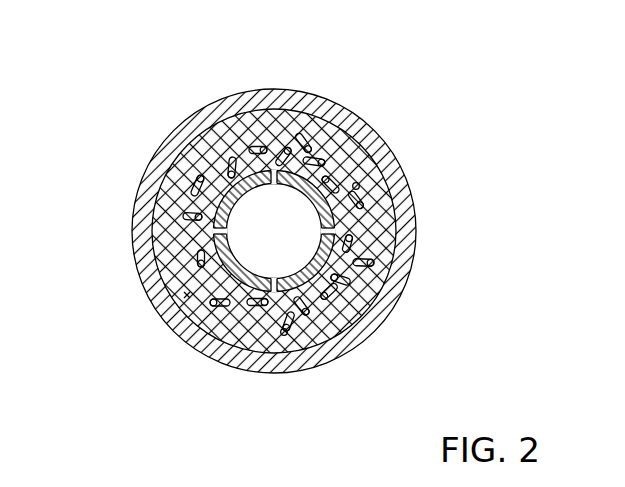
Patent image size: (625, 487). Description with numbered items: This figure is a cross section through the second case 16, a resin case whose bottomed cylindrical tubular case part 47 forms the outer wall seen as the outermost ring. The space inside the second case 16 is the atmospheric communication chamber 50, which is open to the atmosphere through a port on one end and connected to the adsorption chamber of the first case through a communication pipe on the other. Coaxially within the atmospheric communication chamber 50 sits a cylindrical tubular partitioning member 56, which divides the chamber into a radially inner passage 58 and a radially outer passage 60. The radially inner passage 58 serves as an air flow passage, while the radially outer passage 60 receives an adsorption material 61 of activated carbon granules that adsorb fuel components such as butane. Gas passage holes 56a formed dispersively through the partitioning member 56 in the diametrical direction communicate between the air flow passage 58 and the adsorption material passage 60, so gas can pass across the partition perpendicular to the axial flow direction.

The second case 16 is at (188, 97).
The case part 47 is at (273, 89).
The atmospheric communication chamber 50 is at (344, 318).
The partitioning member 56 is at (197, 183).
The gas passage holes 56a is at (452, 229).
The radially inner passage 58 is at (260, 255).
The radially outer passage 60 is at (186, 295).
The adsorption material 61 is at (358, 185).